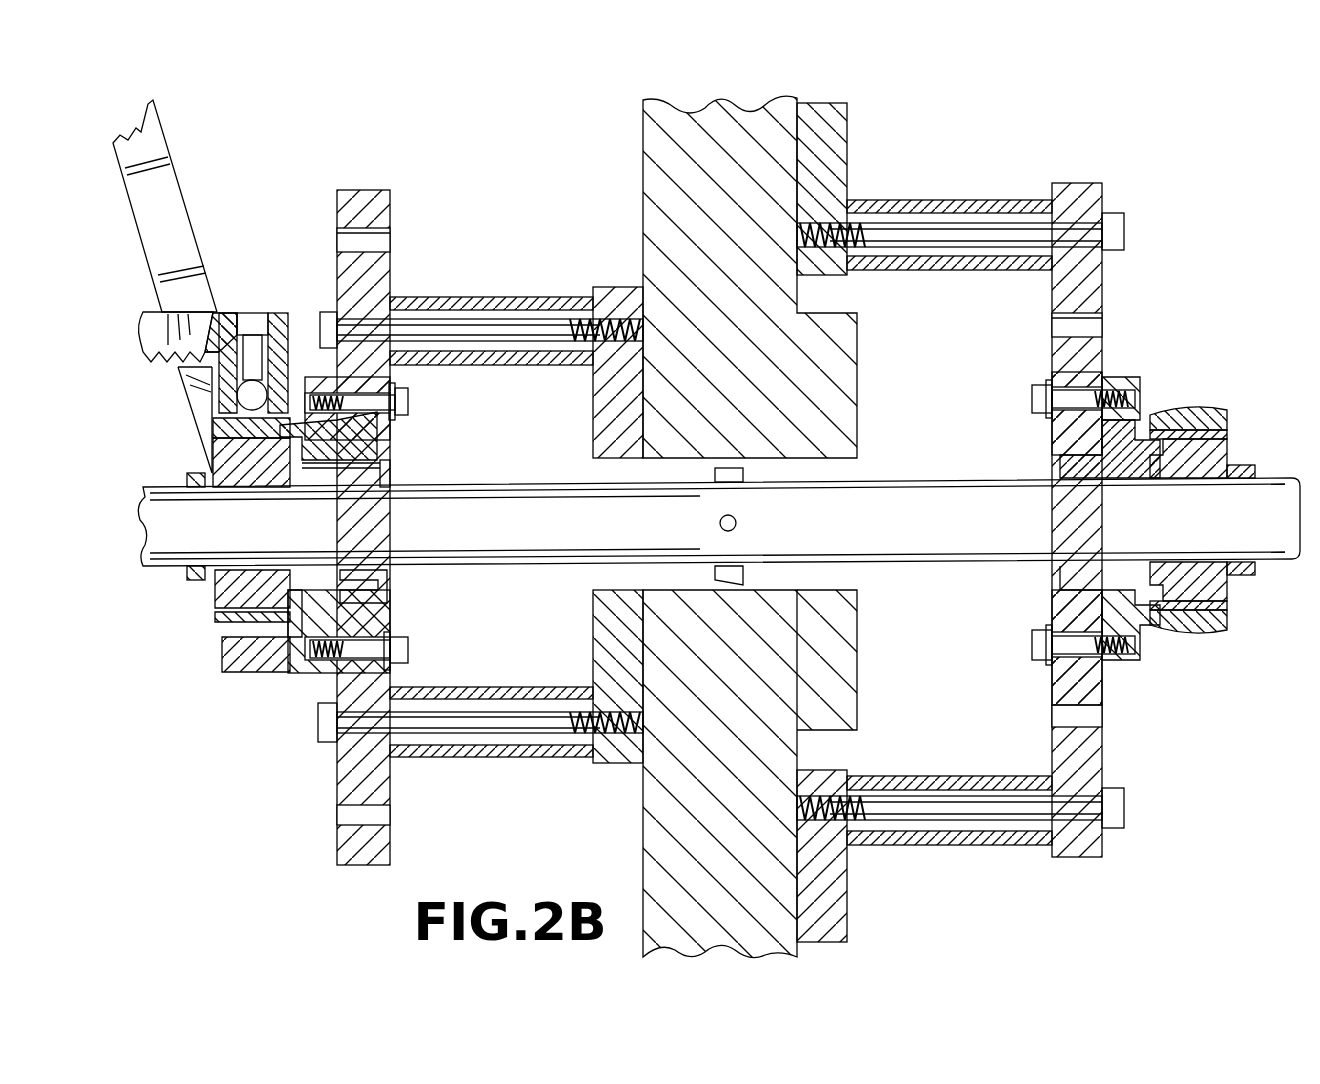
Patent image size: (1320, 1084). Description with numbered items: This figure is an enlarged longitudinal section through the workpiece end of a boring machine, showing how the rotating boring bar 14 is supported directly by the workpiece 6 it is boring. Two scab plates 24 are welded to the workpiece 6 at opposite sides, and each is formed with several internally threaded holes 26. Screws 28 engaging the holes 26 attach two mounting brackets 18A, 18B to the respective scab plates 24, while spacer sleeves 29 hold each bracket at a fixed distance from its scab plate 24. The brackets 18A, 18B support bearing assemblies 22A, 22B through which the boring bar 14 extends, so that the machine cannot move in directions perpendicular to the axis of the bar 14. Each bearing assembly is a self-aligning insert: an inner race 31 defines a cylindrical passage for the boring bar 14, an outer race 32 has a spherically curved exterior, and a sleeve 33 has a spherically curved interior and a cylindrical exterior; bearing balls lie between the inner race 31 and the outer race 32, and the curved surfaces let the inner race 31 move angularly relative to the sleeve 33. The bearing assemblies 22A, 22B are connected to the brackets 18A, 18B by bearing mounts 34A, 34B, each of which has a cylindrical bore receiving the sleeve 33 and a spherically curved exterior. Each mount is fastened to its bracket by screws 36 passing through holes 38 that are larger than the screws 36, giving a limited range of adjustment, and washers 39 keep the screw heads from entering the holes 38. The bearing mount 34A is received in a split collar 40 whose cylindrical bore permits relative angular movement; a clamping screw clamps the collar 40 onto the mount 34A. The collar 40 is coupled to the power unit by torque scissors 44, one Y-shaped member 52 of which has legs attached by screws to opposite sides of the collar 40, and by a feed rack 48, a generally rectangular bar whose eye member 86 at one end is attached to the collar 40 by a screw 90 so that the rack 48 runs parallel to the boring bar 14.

The workpiece 6 is at (643, 140).
The boring bar 14 is at (580, 570).
The mounting bracket 18A is at (370, 866).
The mounting bracket 18B is at (1100, 860).
The bearing assembly 22A is at (215, 612).
The bearing assembly 22B is at (1232, 588).
The scab plate 24 is at (593, 426).
The internally threaded hole 26 is at (820, 250).
The screw 28 is at (990, 270).
The spacer sleeve 29 is at (505, 297).
The inner race 31 is at (190, 580).
The outer race 32 is at (215, 600).
The sleeve 33 is at (215, 640).
The bearing mount 34A is at (390, 455).
The bearing mount 34B is at (1060, 455).
The screw 36 is at (408, 400).
The hole 38 is at (1102, 385).
The washer 39 is at (395, 415).
The collar 40 is at (230, 675).
The torque scissors 44 is at (190, 200).
The feed rack 48 is at (150, 312).
The Y-shaped member 52 is at (200, 250).
The eye member 86 is at (283, 313).
The screw 90 is at (250, 313).